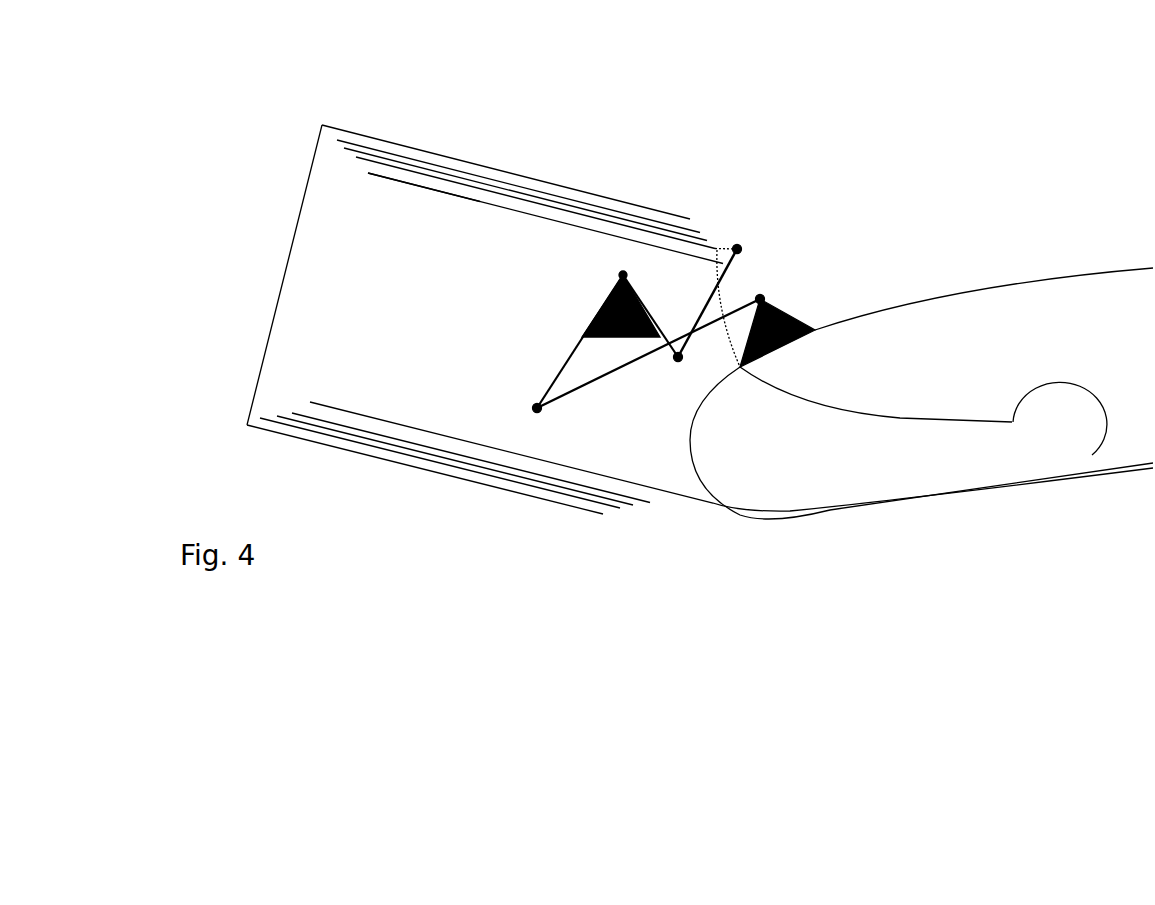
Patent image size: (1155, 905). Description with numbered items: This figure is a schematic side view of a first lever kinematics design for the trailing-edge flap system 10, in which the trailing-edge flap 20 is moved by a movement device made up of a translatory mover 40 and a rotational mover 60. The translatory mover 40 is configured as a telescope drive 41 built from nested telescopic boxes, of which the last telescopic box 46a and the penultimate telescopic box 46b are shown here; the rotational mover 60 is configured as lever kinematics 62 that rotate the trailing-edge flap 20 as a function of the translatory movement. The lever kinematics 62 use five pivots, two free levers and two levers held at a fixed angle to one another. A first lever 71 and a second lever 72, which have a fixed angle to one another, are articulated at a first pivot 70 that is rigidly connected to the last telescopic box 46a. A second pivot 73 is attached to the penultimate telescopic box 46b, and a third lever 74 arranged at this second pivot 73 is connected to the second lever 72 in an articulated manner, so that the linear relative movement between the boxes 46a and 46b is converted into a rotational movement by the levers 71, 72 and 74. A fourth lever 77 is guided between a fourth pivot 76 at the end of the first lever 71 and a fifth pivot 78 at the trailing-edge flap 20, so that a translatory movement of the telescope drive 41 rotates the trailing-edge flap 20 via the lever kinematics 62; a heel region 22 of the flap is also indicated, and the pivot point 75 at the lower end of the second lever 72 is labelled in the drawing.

The trailing-edge flap system 10 is at (803, 118).
The trailing-edge flap 20 is at (1037, 307).
The boot heel / sole 22 is at (1057, 424).
The translatory mover 40 is at (266, 149).
The telescope drive 41 is at (512, 158).
The last telescopic box 46a is at (479, 204).
The penultimate telescopic box 46b is at (708, 240).
The rotational mover 60 is at (834, 240).
The lever kinematics 62 is at (773, 230).
The first pivot 70 is at (622, 270).
The first lever 71 is at (568, 357).
The second lever 72 is at (668, 333).
The second pivot 73 is at (738, 248).
The third lever 74 is at (736, 277).
The fourth pivot 75 is at (678, 362).
The fourth pivot 76 is at (540, 412).
The fourth lever 77 is at (618, 372).
The fifth pivot 78 is at (763, 298).